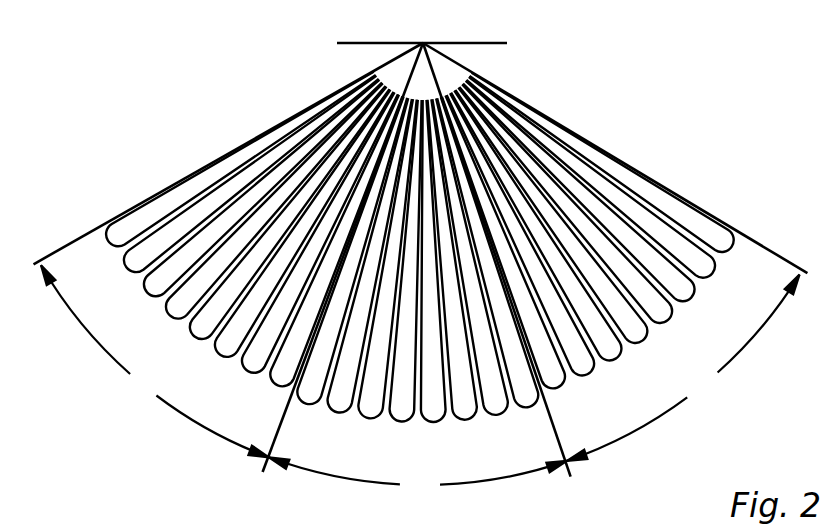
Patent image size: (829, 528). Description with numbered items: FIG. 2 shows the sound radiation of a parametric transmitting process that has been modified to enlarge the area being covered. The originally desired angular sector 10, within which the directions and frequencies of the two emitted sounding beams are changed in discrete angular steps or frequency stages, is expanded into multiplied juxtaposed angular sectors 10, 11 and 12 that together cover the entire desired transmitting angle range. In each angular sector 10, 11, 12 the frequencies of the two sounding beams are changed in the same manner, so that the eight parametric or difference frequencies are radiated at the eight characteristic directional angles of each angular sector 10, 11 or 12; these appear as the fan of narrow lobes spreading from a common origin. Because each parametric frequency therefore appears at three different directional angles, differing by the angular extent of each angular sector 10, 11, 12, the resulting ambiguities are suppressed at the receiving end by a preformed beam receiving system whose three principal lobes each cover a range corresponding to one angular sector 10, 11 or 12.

The angular sector 10 is at (226, 260).
The angular sector 11 is at (418, 294).
The angular sector 12 is at (616, 262).